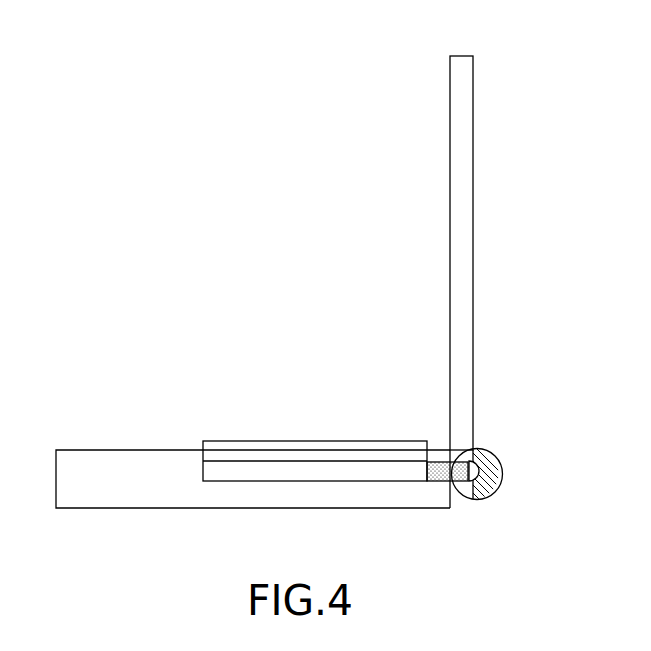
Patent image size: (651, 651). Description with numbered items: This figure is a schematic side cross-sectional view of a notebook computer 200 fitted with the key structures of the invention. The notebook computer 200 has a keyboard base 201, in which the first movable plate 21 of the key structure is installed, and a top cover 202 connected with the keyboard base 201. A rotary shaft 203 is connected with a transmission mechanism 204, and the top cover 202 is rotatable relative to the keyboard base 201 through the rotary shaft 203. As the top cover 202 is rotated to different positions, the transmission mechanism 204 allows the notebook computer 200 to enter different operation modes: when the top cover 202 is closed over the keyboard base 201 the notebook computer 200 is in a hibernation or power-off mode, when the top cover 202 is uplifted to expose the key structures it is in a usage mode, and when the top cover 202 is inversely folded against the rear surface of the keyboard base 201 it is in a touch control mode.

The notebook computer 200 is at (168, 246).
The keyboard base 201 is at (100, 459).
The top cover 202 is at (462, 203).
The rotary shaft 203 is at (490, 467).
The transmission mechanism 204 is at (427, 468).
The first movable plate 21 is at (263, 470).